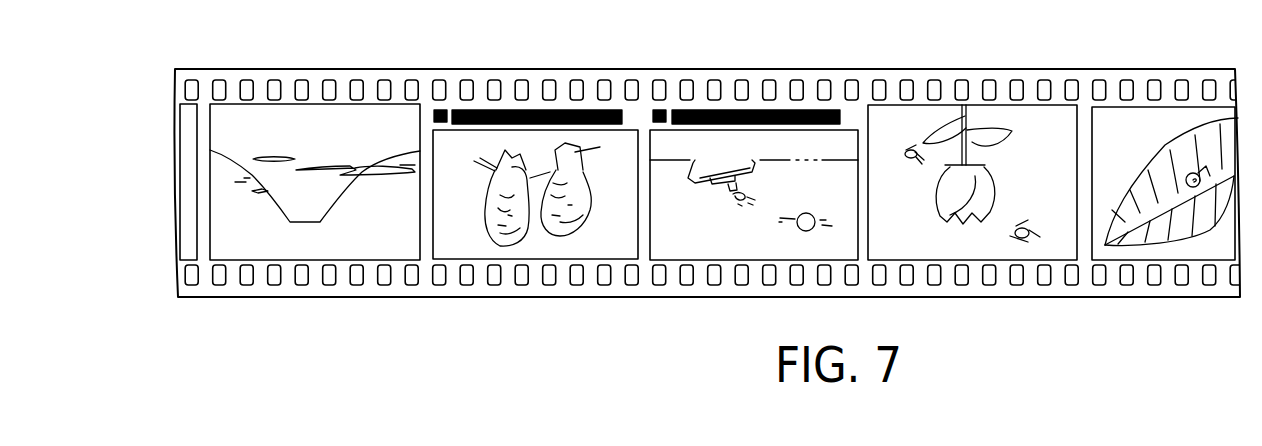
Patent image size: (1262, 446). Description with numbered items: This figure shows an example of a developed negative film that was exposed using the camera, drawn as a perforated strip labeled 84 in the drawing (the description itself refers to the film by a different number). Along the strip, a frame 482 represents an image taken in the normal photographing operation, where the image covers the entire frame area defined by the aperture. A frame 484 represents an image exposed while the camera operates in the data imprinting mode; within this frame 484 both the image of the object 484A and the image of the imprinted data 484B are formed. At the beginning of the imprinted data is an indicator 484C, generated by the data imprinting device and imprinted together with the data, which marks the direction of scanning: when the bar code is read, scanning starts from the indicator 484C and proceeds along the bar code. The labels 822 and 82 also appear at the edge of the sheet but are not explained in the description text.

The film strip 84 is at (866, 69).
The frame 482 is at (350, 247).
The frame 484 is at (660, 240).
The image of the object 484A is at (538, 245).
The image of the imprinted data 484B is at (560, 110).
The indicator 484C is at (445, 110).
The element 822 is at (525, 442).
The element 82 is at (726, 435).